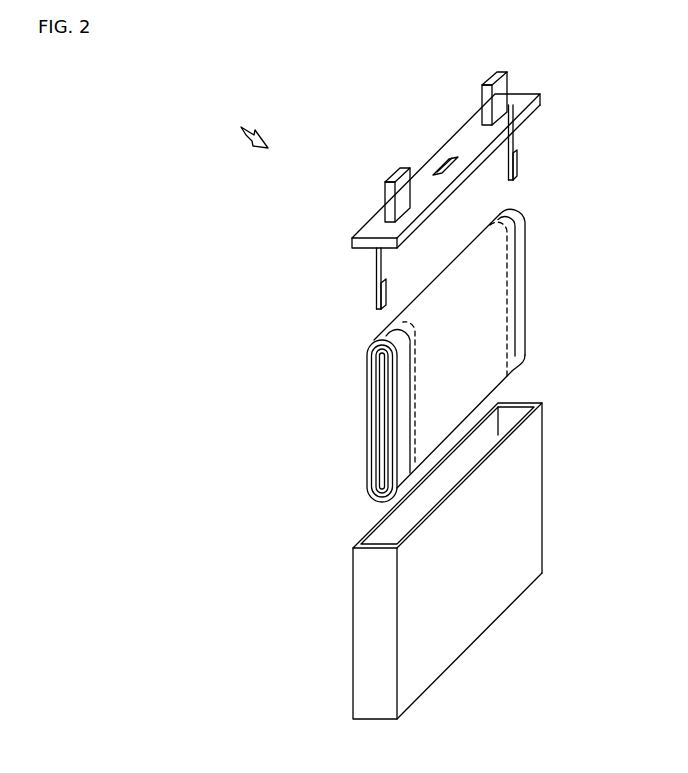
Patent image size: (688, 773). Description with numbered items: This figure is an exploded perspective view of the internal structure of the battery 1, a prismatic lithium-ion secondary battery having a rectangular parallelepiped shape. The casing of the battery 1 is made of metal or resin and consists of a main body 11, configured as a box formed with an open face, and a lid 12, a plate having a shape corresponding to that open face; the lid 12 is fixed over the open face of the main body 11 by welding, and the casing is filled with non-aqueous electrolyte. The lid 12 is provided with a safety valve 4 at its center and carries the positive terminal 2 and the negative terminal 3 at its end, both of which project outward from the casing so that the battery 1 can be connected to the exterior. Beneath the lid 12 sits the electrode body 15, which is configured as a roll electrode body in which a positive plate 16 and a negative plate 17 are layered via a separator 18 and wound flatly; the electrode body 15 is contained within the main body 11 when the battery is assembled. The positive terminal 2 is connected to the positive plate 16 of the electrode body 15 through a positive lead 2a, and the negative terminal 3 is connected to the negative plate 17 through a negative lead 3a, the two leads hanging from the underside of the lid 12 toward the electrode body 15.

The battery 1 is at (248, 130).
The positive terminal 2 is at (482, 81).
The positive lead 2a is at (517, 160).
The negative terminal 3 is at (385, 176).
The negative lead 3a is at (377, 290).
The safety valve 4 is at (444, 163).
The main body 11 is at (538, 468).
The lid 12 is at (542, 94).
The electrode body 15 is at (567, 287).
The positive plate 16 is at (526, 247).
The negative plate 17 is at (398, 424).
The separator 18 is at (495, 338).